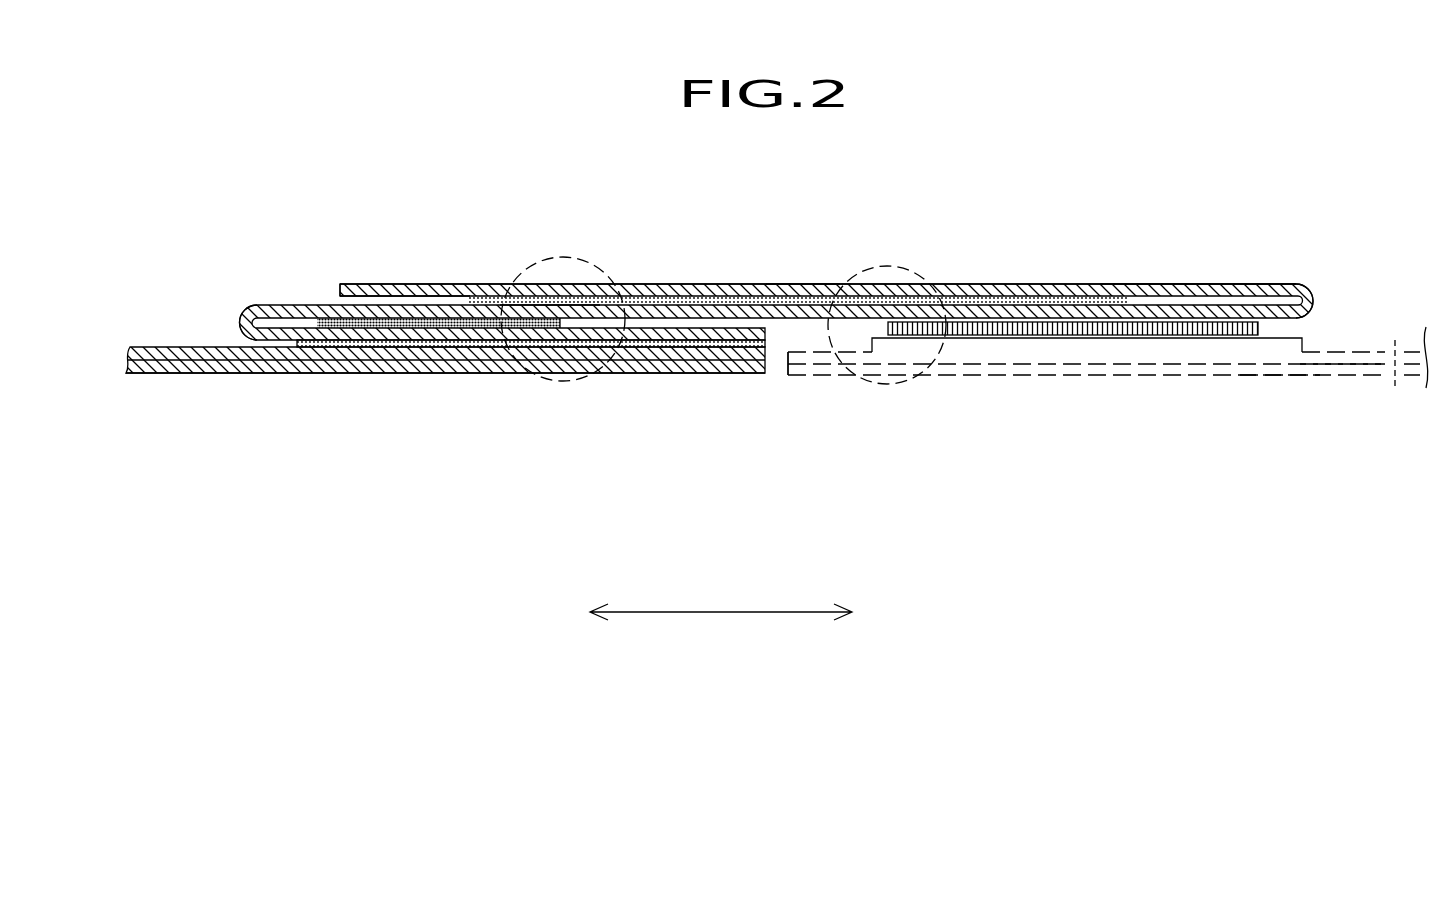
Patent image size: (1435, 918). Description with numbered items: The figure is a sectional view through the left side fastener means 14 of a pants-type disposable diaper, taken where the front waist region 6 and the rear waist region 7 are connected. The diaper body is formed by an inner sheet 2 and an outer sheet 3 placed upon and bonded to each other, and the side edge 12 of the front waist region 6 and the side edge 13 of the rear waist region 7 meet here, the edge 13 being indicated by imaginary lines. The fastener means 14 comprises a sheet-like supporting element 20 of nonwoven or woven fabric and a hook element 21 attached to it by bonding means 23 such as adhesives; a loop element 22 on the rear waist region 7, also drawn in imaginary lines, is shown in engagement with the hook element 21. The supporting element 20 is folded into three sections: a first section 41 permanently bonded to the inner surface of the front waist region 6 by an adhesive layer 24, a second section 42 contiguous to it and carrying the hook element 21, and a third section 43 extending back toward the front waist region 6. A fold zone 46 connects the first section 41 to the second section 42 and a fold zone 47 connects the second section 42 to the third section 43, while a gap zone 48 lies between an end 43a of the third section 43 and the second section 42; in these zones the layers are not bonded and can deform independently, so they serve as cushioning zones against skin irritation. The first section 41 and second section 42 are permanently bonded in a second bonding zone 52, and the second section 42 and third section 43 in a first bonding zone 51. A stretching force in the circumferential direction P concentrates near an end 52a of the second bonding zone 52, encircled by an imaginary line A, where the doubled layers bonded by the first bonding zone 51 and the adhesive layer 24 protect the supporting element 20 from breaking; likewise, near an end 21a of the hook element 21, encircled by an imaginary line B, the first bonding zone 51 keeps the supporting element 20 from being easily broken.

The inner sheet 2 is at (130, 345).
The outer sheet 3 is at (146, 380).
The front waist region 6 is at (211, 388).
The rear waist region 7 is at (1286, 392).
The transversely opposite edge of the front waist region 12 is at (428, 373).
The transversely opposite edge of the rear waist region 13 is at (1325, 376).
The fastener means 14 is at (1133, 250).
The supporting element 20 is at (832, 268).
The hook element 21 is at (1000, 335).
The end of the hook element 21a is at (860, 354).
The loop element 22 is at (1085, 345).
The bonding means 23 is at (965, 322).
The adhesive layer 24 is at (703, 347).
The first section 41 is at (732, 332).
The second section 42 is at (650, 300).
The third section 43 is at (598, 288).
The end of the third section 43a is at (345, 283).
The fold zone 46 is at (240, 316).
The fold zone 47 is at (1316, 302).
The gap zone 48 is at (352, 300).
The first bonding zone 51 is at (540, 305).
The second bonding zone 52 is at (455, 320).
The end of the second bonding zone 52a is at (587, 330).
The imaginary line A is at (545, 385).
The imaginary line B is at (888, 266).
The circumferential direction P is at (723, 612).